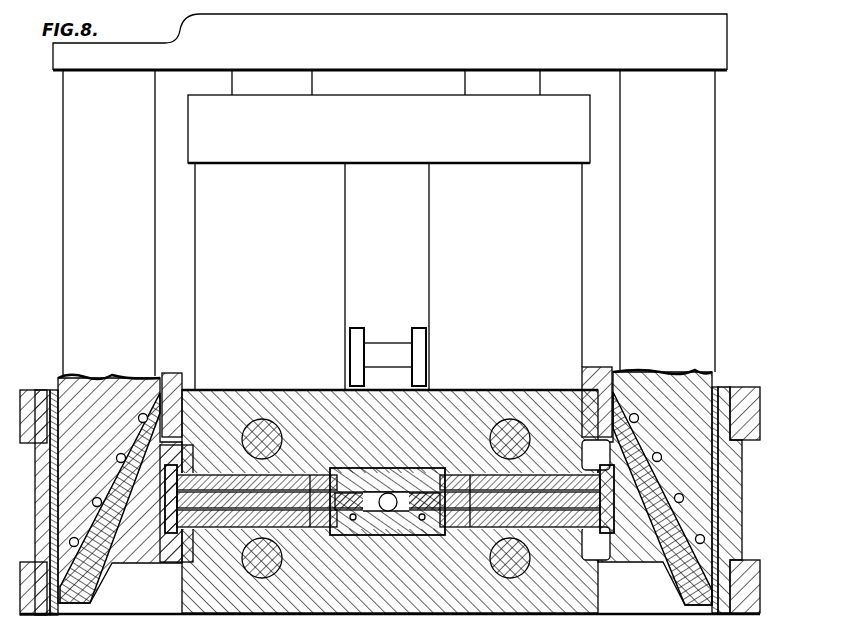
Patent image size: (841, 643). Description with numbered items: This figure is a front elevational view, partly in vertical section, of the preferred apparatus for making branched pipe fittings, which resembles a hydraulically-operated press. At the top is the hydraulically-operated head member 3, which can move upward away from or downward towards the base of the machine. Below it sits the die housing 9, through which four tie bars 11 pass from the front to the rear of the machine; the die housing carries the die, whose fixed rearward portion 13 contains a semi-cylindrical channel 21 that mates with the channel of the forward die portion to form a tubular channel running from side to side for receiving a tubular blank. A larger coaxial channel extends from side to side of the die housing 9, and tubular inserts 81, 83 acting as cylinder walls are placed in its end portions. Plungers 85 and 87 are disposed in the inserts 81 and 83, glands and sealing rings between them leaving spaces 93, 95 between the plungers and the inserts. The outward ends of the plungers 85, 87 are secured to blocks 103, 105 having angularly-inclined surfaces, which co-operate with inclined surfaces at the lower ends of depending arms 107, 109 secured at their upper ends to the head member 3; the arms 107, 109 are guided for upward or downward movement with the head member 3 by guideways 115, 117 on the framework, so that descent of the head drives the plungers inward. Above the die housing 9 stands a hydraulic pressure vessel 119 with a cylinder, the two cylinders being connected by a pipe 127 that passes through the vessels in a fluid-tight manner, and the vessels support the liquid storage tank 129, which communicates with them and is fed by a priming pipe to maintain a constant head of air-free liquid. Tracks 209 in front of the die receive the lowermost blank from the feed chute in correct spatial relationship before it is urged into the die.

The head member 3 is at (724, 60).
The depending arm 107 is at (65, 285).
The depending arm 109 is at (712, 288).
The liquid storage tank 129 is at (392, 158).
The hydraulic pressure vessel 119 is at (335, 284).
The pipe 127 is at (388, 352).
The guideway 115 is at (44, 497).
The guideway 117 is at (737, 532).
The block 103 is at (157, 560).
The block 105 is at (643, 553).
The die housing 9 is at (347, 610).
The tie bars 11 is at (282, 395).
The plunger 85 is at (213, 477).
The plunger 87 is at (547, 473).
The tubular insert 81 is at (233, 527).
The space 95 is at (467, 527).
The tracks 209 is at (370, 527).
The semi-cylindrical channel 21 is at (365, 468).
The rearward portion of the die 13 is at (418, 468).
The space 93 is at (312, 530).
The tubular insert 83 is at (565, 470).